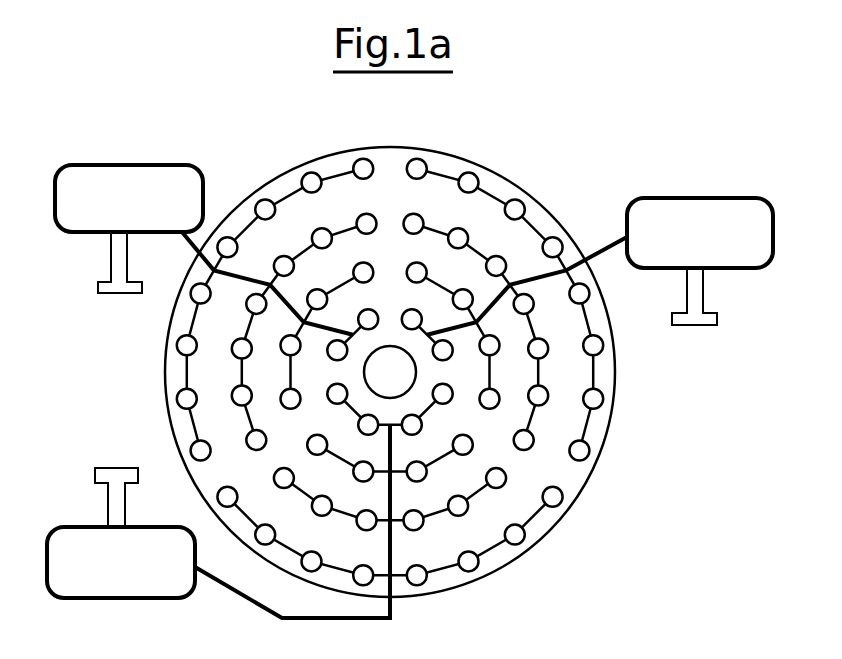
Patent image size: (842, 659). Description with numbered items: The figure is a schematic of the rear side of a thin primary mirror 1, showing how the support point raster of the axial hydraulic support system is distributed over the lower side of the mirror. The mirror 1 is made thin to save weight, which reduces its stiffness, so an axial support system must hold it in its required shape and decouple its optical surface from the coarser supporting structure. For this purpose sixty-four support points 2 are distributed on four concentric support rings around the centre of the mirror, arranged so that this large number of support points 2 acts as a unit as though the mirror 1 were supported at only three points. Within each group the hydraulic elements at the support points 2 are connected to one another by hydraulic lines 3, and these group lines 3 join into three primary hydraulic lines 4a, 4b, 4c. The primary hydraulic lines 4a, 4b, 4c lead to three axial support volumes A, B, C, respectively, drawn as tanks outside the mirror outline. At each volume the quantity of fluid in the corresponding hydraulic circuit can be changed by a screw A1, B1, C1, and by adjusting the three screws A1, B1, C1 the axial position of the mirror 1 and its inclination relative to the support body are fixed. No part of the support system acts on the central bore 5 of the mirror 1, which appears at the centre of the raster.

The mirror 1 is at (570, 478).
The support points 2 is at (562, 497).
The hydraulic lines 3 is at (536, 514).
The primary hydraulic line 4a is at (196, 243).
The primary hydraulic line 4b is at (389, 603).
The primary hydraulic line 4c is at (602, 248).
The central bore 5 is at (381, 383).
The axial support volume A is at (102, 186).
The screw A1 is at (98, 288).
The axial support volume B is at (107, 578).
The screw B1 is at (100, 478).
The axial support volume C is at (695, 217).
The screw C1 is at (717, 318).